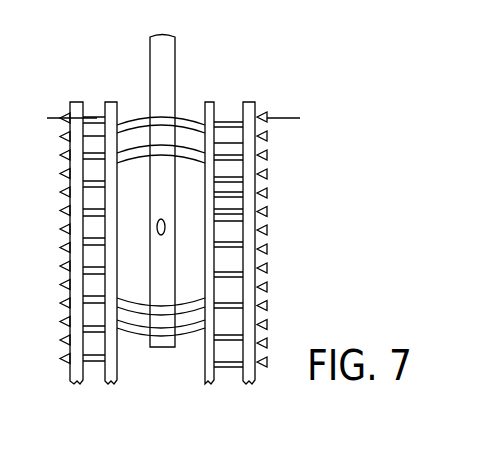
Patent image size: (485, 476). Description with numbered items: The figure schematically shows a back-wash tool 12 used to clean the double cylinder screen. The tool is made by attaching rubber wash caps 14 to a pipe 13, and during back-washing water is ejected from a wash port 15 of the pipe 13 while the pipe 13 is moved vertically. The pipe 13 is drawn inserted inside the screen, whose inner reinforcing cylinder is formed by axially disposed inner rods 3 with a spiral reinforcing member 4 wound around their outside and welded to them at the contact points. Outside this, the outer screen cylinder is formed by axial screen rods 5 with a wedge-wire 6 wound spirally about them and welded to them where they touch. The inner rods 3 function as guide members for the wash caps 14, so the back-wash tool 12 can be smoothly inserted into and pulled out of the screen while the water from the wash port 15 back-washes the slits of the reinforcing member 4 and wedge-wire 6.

The inner rods 3 is at (200, 353).
The spiral reinforcing member 4 is at (225, 118).
The screen rods 5 is at (250, 110).
The wedge-wire 6 is at (268, 137).
The back-wash tool 12 is at (193, 58).
The pipe 13 is at (150, 78).
The rubber wash caps 14 is at (187, 147).
The wash port 15 is at (165, 229).